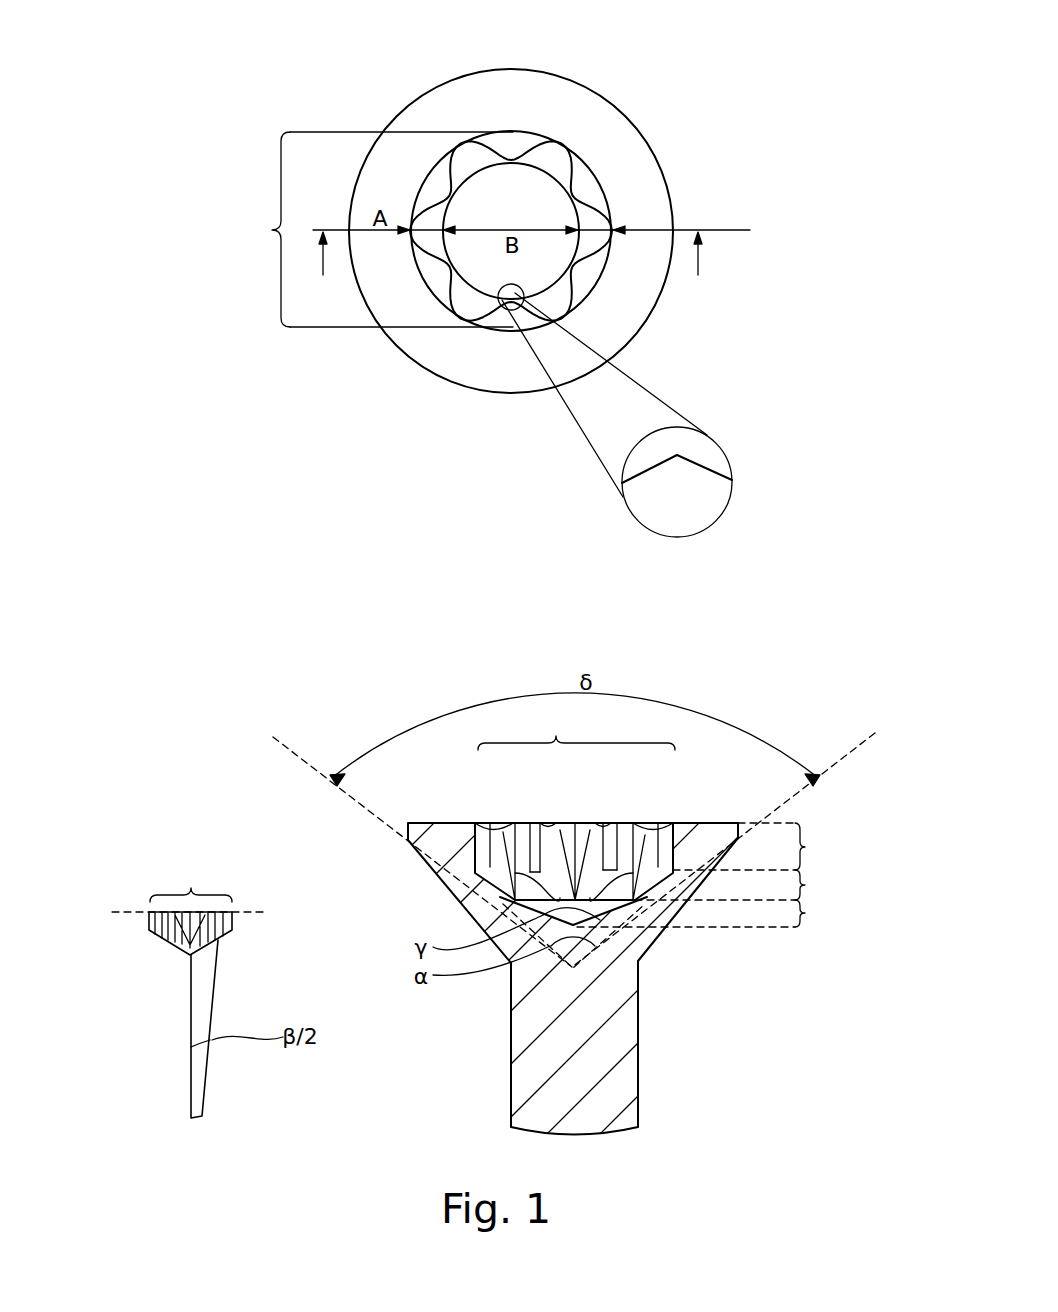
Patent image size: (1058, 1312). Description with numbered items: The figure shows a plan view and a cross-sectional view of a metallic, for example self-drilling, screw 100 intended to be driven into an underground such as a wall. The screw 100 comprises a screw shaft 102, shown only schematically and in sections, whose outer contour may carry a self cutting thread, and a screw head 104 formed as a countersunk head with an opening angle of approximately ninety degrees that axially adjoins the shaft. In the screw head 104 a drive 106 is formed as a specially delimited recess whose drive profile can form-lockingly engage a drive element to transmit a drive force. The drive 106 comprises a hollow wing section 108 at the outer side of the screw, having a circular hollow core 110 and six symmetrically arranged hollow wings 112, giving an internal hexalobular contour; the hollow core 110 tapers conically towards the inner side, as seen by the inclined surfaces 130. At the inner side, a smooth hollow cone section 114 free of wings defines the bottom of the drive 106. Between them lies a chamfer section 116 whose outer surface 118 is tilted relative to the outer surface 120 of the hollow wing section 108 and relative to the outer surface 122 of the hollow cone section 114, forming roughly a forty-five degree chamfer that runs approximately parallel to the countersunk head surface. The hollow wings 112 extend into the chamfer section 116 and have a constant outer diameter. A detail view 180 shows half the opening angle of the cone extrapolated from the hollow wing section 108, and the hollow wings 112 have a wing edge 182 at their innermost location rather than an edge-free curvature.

The screw 100 is at (780, 297).
The screw shaft 102 is at (523, 1090).
The screw head 104 is at (490, 372).
The drive 106 is at (412, 517).
The hollow wing section 108 is at (759, 846).
The hollow core 110 is at (510, 177).
The hollow wings 112 is at (463, 160).
The hollow cone section 114 is at (711, 913).
The chamfer section 116 is at (740, 885).
The outer surface of the chamfer section 118 is at (645, 900).
The outer surface of the hollow wing section 120 is at (682, 830).
The outer surface of the hollow cone section 122 is at (603, 913).
The inclined surfaces 130 is at (510, 843).
The detail view 180 is at (107, 906).
The wing edge 182 is at (682, 462).